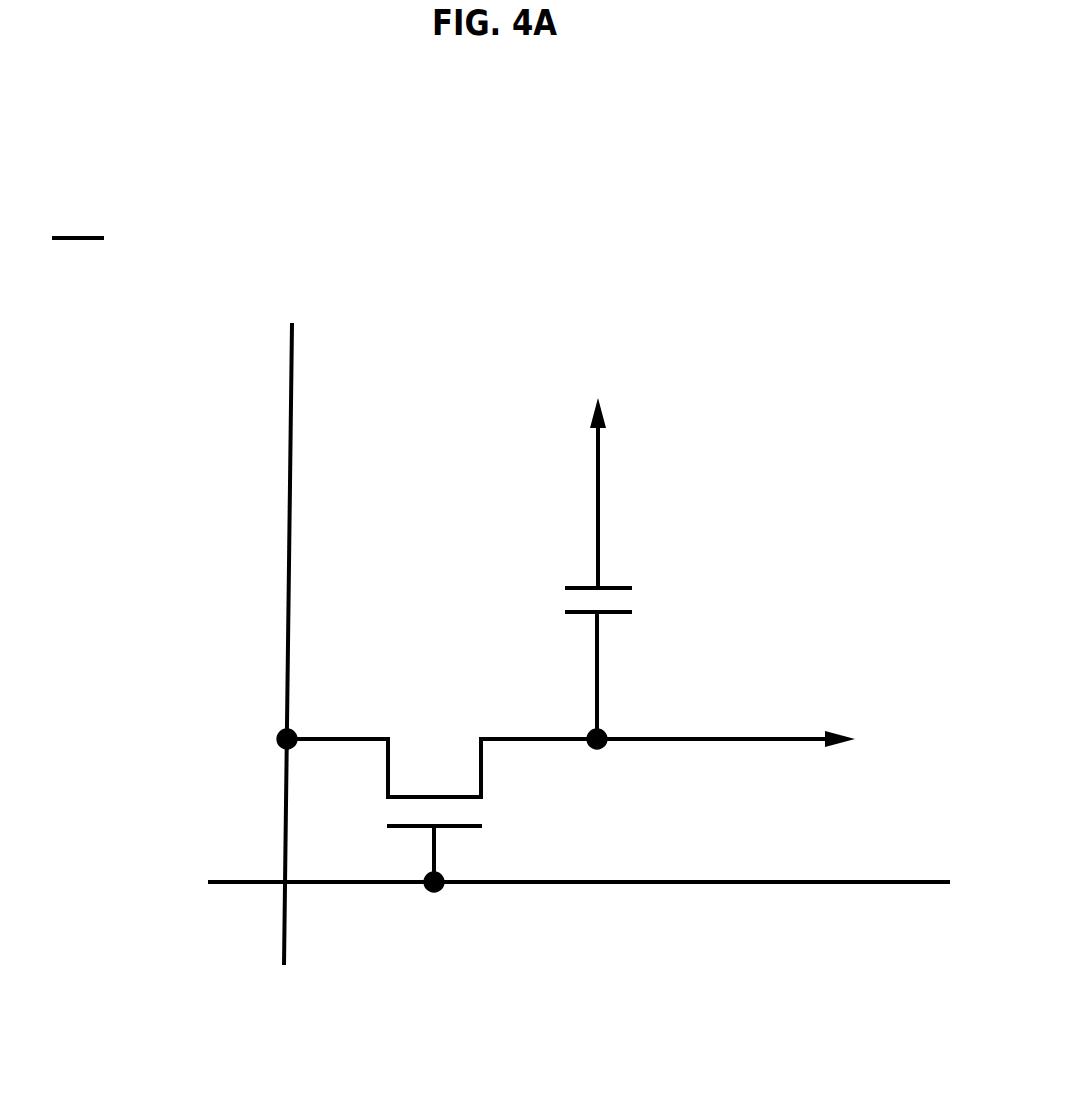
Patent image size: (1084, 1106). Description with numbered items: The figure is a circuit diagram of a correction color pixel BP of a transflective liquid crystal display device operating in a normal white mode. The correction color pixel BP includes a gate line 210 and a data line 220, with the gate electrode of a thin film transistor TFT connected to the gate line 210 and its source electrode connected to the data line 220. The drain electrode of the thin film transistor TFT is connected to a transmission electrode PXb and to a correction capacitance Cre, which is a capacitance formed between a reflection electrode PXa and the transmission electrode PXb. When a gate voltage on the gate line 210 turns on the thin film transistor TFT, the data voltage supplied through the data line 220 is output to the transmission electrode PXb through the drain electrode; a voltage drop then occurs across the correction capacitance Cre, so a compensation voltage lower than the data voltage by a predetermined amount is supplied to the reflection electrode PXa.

The gate line 210 is at (546, 883).
The data line 220 is at (295, 616).
The thin film transistor TFT is at (442, 784).
The correction capacitance Cre is at (634, 658).
The reflection electrode PXa is at (622, 462).
The transmission electrode PXb is at (763, 727).
The correction color pixel BP is at (78, 210).